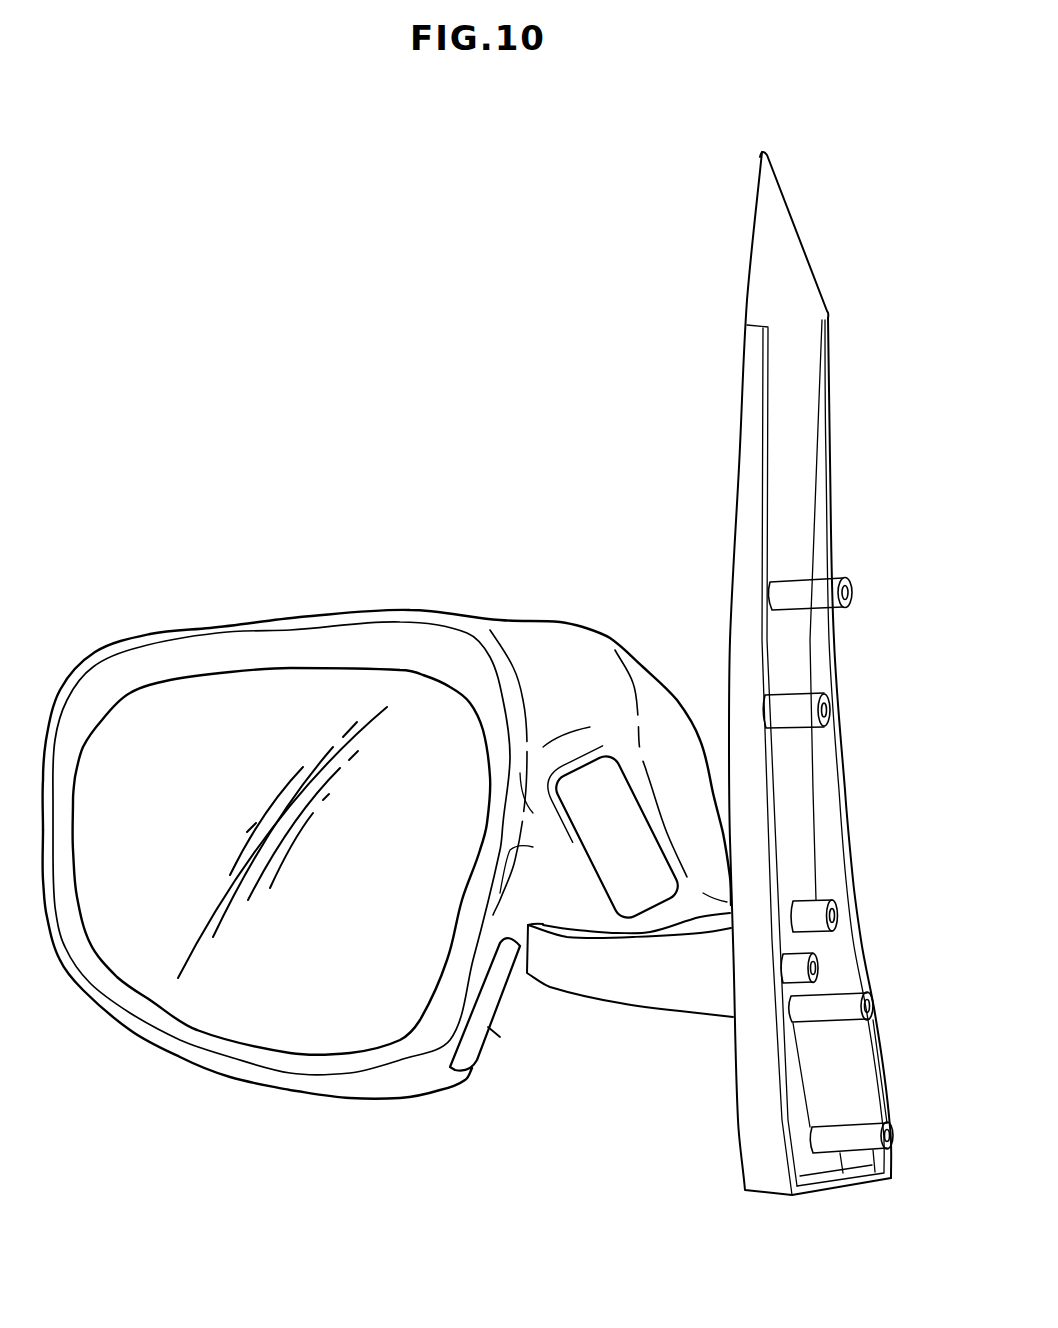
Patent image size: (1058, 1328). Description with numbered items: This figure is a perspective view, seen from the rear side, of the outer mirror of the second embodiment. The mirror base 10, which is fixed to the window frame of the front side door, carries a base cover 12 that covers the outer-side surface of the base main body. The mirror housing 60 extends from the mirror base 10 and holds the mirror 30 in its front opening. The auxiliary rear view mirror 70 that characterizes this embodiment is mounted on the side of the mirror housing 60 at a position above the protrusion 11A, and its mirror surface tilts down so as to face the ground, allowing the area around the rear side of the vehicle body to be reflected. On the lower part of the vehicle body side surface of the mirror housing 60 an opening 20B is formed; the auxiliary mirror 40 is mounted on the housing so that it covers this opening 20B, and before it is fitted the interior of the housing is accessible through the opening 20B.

The mirror base 10 is at (650, 313).
The protrusion 11A is at (604, 988).
The base cover 12 is at (733, 433).
The opening 20B is at (500, 1037).
The mirror 30 is at (252, 1010).
The auxiliary mirror 40 is at (463, 1053).
The mirror housing 60 is at (207, 628).
The auxiliary rear view mirror 70 is at (600, 778).